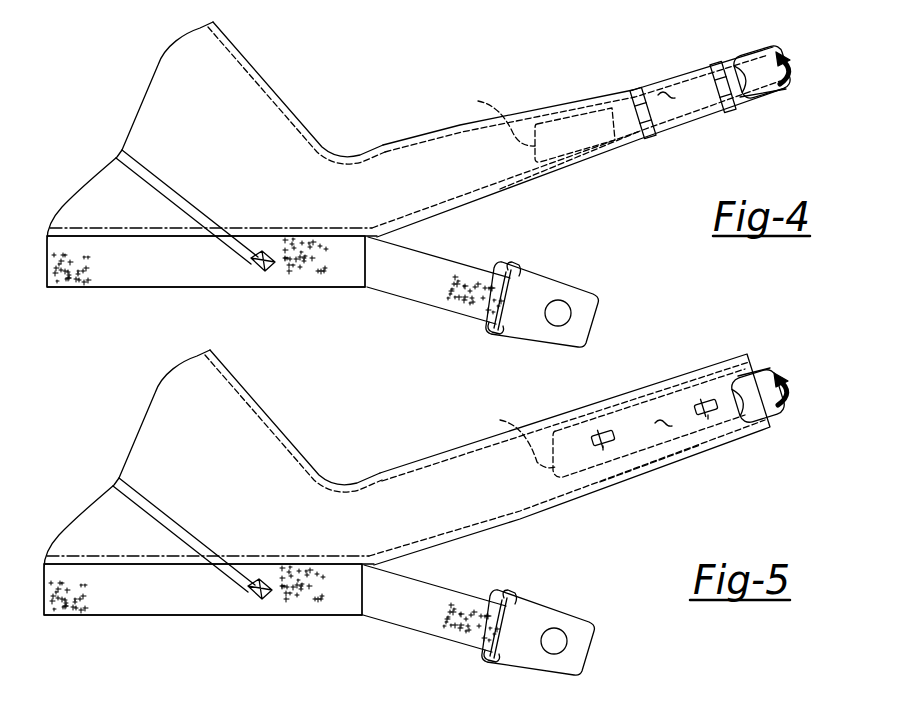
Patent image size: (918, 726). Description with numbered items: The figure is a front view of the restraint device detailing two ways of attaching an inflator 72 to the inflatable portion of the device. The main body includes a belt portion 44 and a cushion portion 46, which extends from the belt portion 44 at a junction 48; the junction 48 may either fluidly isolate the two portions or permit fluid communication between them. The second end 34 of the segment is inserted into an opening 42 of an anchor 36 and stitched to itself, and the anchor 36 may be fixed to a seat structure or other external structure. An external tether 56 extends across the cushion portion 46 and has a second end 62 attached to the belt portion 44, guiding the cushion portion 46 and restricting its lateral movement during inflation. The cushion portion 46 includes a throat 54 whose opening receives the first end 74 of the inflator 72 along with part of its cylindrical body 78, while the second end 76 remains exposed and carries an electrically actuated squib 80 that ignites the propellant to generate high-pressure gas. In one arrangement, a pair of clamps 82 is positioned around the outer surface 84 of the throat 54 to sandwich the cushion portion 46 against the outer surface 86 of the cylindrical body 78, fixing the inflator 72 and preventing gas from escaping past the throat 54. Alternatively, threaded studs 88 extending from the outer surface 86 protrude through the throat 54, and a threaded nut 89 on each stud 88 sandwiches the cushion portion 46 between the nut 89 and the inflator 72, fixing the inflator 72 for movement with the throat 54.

In FIG. 4, the second end 34 is at (512, 283).
In FIG. 5, the second end 34 is at (505, 612).
In FIG. 4, the anchor 36 is at (588, 315).
In FIG. 5, the anchor 36 is at (585, 630).
In FIG. 4, the opening 42 is at (488, 327).
In FIG. 5, the opening 42 is at (488, 652).
In FIG. 4, the belt portion 44 is at (168, 295).
In FIG. 5, the belt portion 44 is at (168, 625).
In FIG. 4, the cushion portion 46 is at (300, 104).
In FIG. 5, the cushion portion 46 is at (295, 474).
In FIG. 4, the junction 48 is at (348, 235).
In FIG. 5, the junction 48 is at (330, 567).
In FIG. 4, the throat 54 is at (430, 160).
In FIG. 5, the throat 54 is at (450, 484).
In FIG. 4, the external tether 56 is at (188, 202).
In FIG. 5, the external tether 56 is at (186, 532).
In FIG. 4, the second end 62 is at (265, 265).
In FIG. 5, the second end 62 is at (262, 594).
In FIG. 4, the inflator 72 is at (742, 65).
In FIG. 5, the inflator 72 is at (734, 386).
In FIG. 4, the first end 74 is at (492, 117).
In FIG. 5, the first end 74 is at (514, 436).
In FIG. 4, the second end 76 is at (783, 97).
In FIG. 5, the second end 76 is at (763, 373).
In FIG. 4, the cylindrical body 78 is at (612, 147).
In FIG. 5, the cylindrical body 78 is at (672, 447).
In FIG. 4, the squib 80 is at (792, 82).
In FIG. 5, the squib 80 is at (786, 400).
In FIG. 4, the clamp 82 is at (640, 97).
In FIG. 4, the outer surface 84 is at (668, 92).
In FIG. 5, the outer surface 84 is at (665, 421).
In FIG. 4, the outer surface 86 is at (582, 122).
In FIG. 5, the outer surface 86 is at (576, 450).
In FIG. 5, the threaded stud 88 is at (598, 428).
In FIG. 5, the threaded nut 89 is at (603, 447).